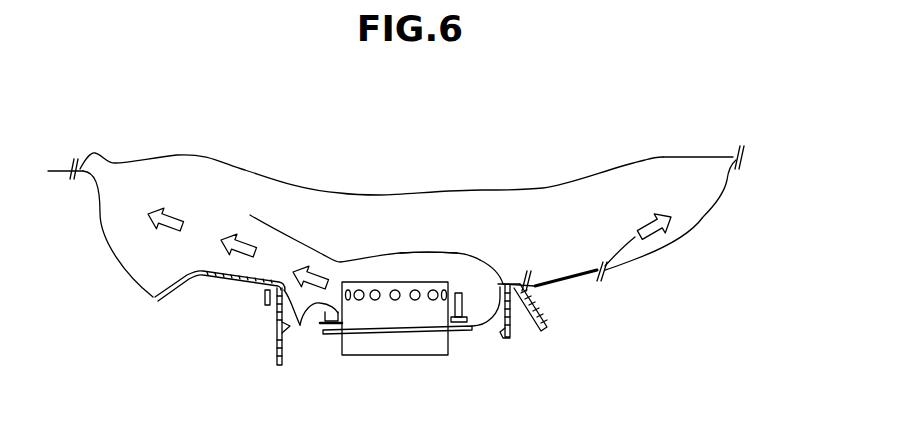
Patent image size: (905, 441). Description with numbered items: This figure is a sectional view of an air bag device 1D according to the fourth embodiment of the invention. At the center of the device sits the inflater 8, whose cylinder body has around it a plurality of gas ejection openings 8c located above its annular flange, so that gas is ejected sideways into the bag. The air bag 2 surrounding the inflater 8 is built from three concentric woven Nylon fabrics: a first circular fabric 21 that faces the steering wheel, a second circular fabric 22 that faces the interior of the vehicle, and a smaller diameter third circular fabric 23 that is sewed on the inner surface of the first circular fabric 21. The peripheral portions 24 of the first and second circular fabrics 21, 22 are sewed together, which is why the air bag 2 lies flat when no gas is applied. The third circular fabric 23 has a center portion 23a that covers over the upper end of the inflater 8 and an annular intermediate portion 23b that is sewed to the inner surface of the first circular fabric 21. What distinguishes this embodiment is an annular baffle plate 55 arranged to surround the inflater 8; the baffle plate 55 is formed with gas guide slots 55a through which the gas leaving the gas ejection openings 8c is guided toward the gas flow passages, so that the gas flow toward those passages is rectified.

The air bag device 1D is at (670, 80).
The air bag 2 is at (543, 190).
The first circular fabric 21 is at (704, 218).
The second circular fabric 22 is at (663, 157).
The third circular fabric 23 is at (408, 253).
The center portion 23a is at (457, 253).
The annular intermediate portion 23b is at (562, 277).
The peripheral portions 24 is at (738, 150).
The inflater 8 is at (433, 356).
The gas ejection openings 8c is at (372, 290).
The annular baffle plate 55 is at (465, 317).
The gas guide slots 55a is at (300, 327).